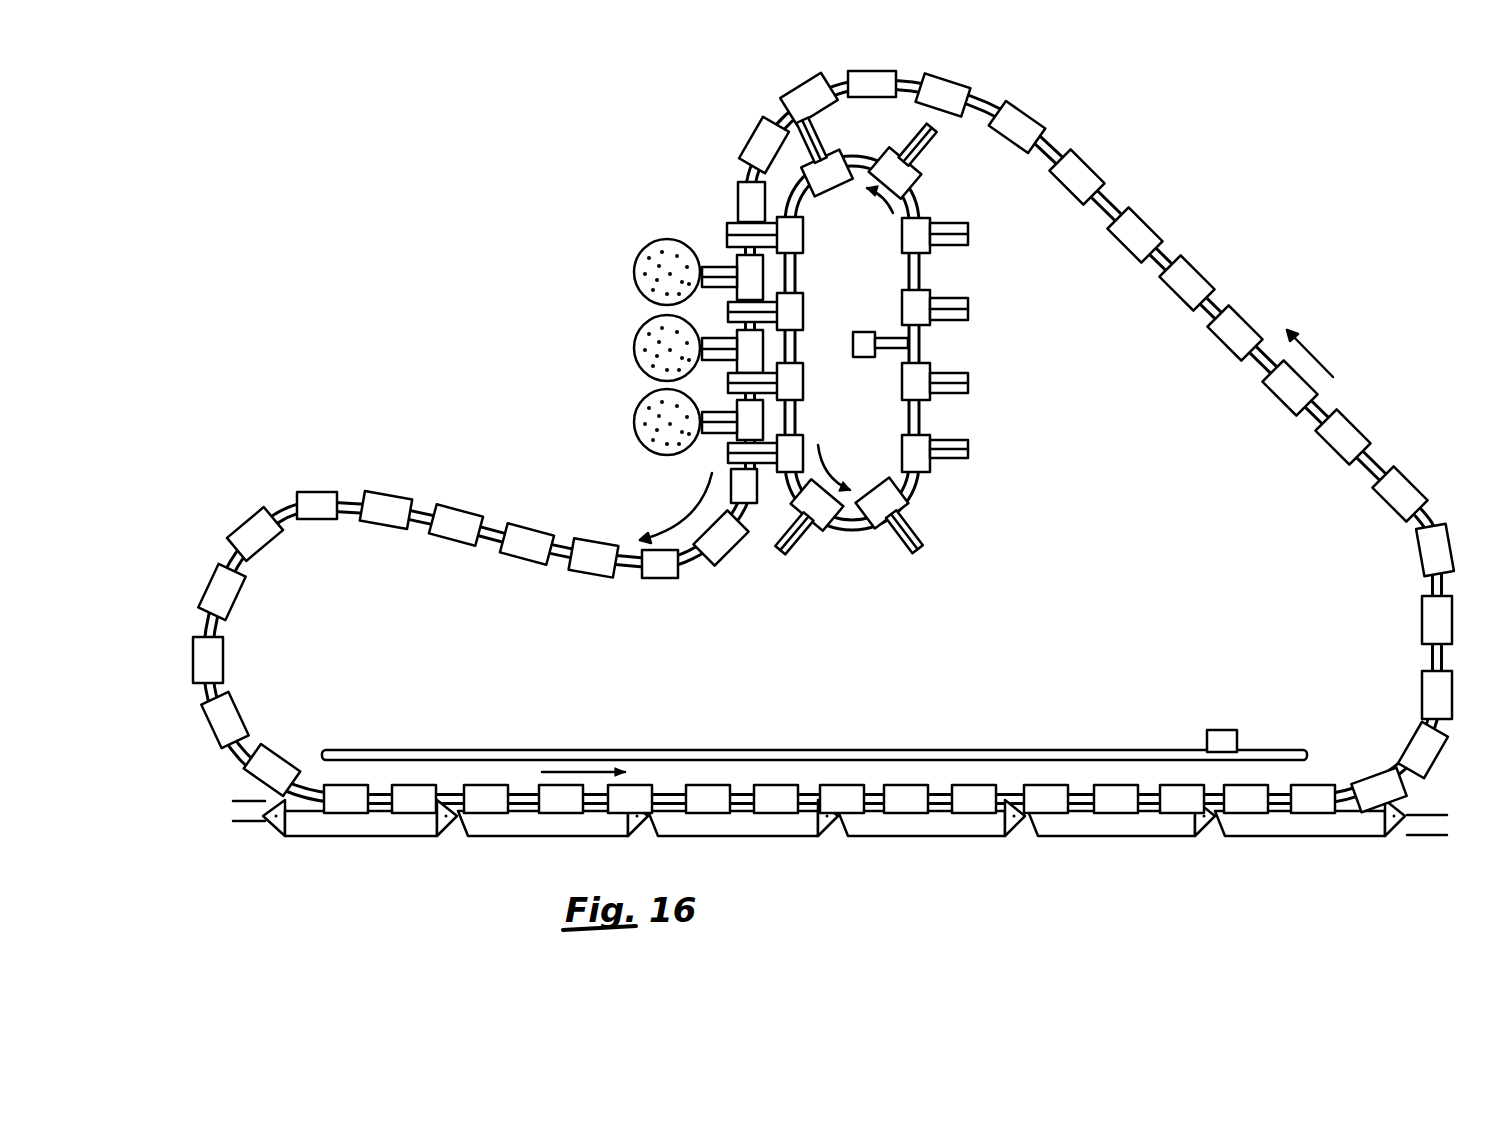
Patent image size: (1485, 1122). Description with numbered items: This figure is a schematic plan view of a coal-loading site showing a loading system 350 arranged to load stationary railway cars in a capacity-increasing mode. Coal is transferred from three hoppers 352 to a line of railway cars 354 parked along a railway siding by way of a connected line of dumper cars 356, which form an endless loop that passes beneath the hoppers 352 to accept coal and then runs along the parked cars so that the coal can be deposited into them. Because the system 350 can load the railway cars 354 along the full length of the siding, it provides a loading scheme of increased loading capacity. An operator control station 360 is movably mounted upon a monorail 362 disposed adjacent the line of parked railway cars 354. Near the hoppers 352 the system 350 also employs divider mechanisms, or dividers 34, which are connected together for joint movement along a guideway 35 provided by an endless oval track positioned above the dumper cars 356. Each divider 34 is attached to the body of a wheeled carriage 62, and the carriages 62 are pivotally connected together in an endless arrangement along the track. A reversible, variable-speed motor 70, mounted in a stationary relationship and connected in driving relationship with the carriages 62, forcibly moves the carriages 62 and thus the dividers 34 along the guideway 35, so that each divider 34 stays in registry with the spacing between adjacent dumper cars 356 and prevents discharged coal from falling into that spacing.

The divider 34 is at (968, 230).
The guideway 35 is at (922, 272).
The wheeled carriage 62 is at (898, 458).
The reversible, variable-speed motor 70 is at (866, 330).
The loading system 350 is at (498, 340).
The hopper 352 is at (640, 262).
The railway car 354 is at (517, 836).
The dumper car 356 is at (1136, 214).
The operator control station 360 is at (1218, 730).
The monorail 362 is at (638, 750).